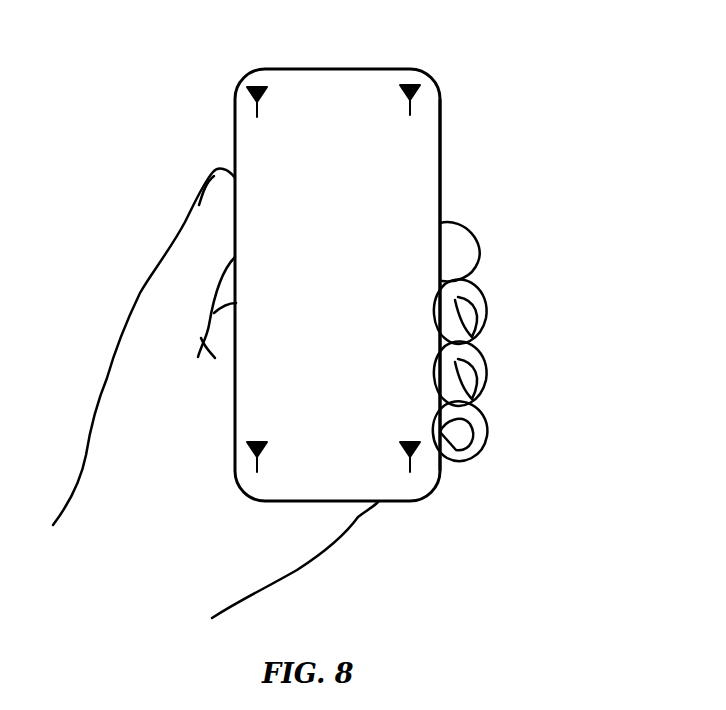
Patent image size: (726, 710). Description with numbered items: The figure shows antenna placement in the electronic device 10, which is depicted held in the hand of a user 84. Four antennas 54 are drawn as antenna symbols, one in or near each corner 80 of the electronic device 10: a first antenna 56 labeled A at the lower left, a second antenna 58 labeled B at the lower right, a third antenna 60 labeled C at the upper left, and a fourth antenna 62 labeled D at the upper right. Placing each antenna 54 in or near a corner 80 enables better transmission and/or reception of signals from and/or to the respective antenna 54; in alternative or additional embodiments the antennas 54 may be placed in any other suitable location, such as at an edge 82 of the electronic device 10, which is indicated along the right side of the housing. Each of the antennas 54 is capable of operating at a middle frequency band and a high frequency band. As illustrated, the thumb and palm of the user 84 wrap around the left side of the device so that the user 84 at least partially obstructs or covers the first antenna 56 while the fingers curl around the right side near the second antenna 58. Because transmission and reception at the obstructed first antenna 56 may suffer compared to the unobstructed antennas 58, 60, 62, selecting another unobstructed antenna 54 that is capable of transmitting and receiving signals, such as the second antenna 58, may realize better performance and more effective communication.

The electronic device 10 is at (488, 528).
The corner 80 is at (429, 67).
The edge 82 is at (442, 197).
The user 84 is at (147, 286).
The antennas 54 is at (356, 280).
The first antenna 56 is at (252, 457).
The second antenna 58 is at (413, 456).
The third antenna 60 is at (254, 99).
The fourth antenna 62 is at (414, 97).